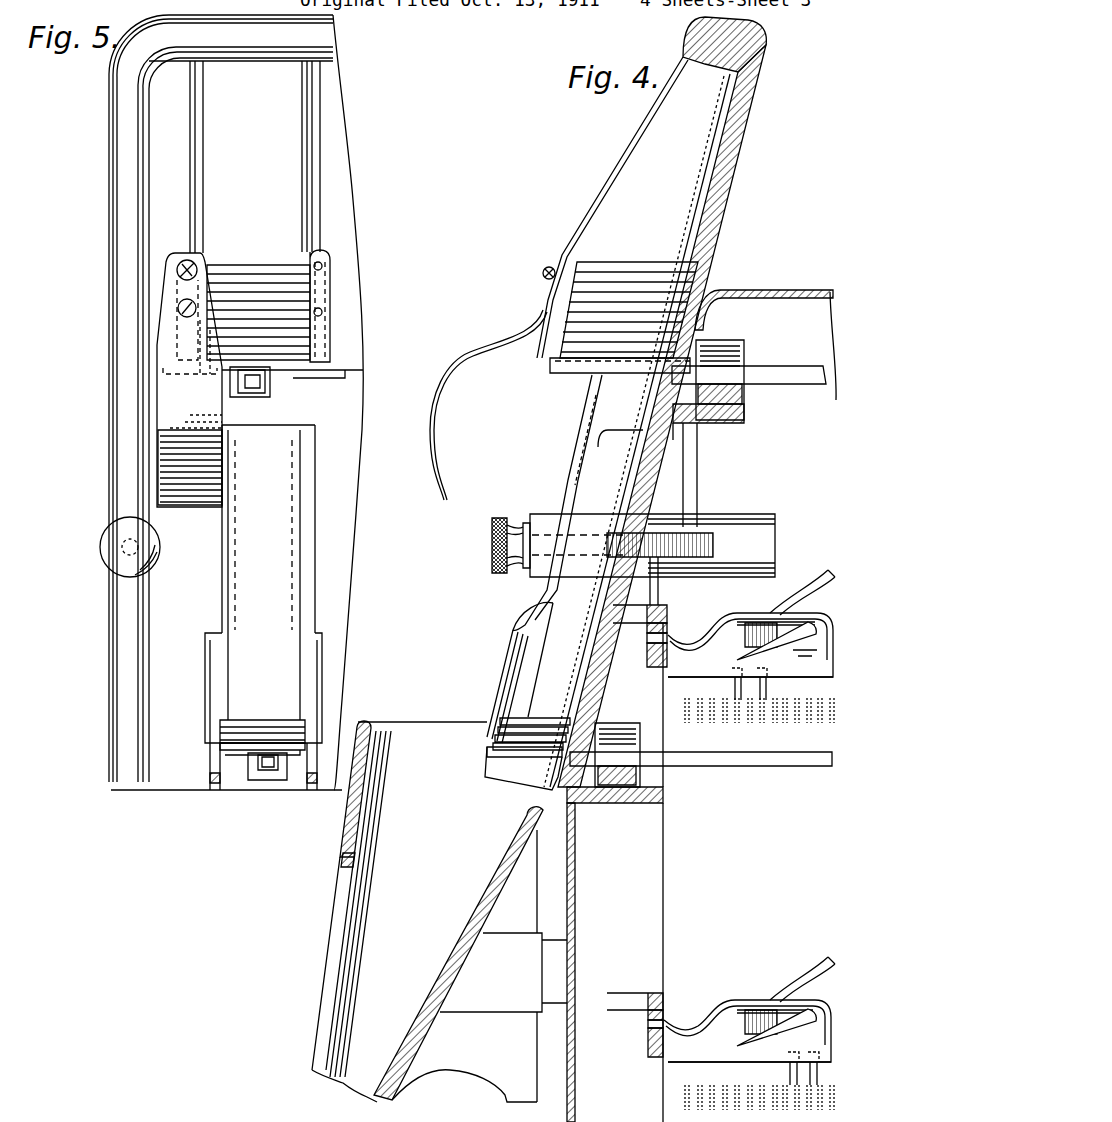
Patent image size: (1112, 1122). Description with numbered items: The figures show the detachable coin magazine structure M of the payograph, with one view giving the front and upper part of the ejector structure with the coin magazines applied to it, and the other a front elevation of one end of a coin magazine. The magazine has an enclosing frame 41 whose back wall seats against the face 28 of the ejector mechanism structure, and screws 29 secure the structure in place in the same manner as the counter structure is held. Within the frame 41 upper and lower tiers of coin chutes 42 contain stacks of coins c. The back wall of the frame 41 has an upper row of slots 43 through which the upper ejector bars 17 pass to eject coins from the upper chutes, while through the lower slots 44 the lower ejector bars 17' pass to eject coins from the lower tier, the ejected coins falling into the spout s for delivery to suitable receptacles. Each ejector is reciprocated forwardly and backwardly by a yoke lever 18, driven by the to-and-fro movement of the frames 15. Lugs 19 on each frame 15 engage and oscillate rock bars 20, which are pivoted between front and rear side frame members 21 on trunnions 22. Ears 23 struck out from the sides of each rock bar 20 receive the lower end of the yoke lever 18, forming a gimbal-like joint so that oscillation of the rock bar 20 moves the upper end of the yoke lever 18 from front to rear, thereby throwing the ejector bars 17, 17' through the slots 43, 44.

In FIG. 5, the coin magazine M is at (364, 205).
In FIG. 4, the spout S is at (439, 911).
In FIG. 5, the stacks of coins C is at (253, 265).
In FIG. 4, the stacks of coins C is at (633, 268).
In FIG. 4, the frame 15 is at (704, 724).
In FIG. 5, the upper ejector bar 17 is at (278, 396).
In FIG. 4, the upper ejector bar 17 is at (749, 433).
In FIG. 5, the lower ejector bar 17' is at (253, 790).
In FIG. 4, the lower ejector bar 17' is at (701, 759).
In FIG. 4, the yoke lever 18 is at (825, 574).
In FIG. 4, the lug 19 is at (735, 688).
In FIG. 4, the rock bar 20 is at (824, 672).
In FIG. 4, the side frame member 21 is at (662, 608).
In FIG. 4, the trunnion 22 is at (655, 642).
In FIG. 4, the ear 23 is at (752, 648).
In FIG. 4, the front face of coin chute ledge 28 is at (640, 480).
In FIG. 5, the screw stud 29 is at (116, 571).
In FIG. 4, the screw stud 29 is at (500, 516).
In FIG. 5, the enclosing frame 41 is at (362, 397).
In FIG. 4, the enclosing frame 41 is at (710, 243).
In FIG. 5, the coin chute 42 is at (322, 252).
In FIG. 4, the coin chute 42 is at (607, 213).
In FIG. 5, the upper slot 43 is at (250, 398).
In FIG. 4, the upper slot 43 is at (697, 345).
In FIG. 5, the lower slot 44 is at (248, 778).
In FIG. 4, the lower slot 44 is at (578, 782).